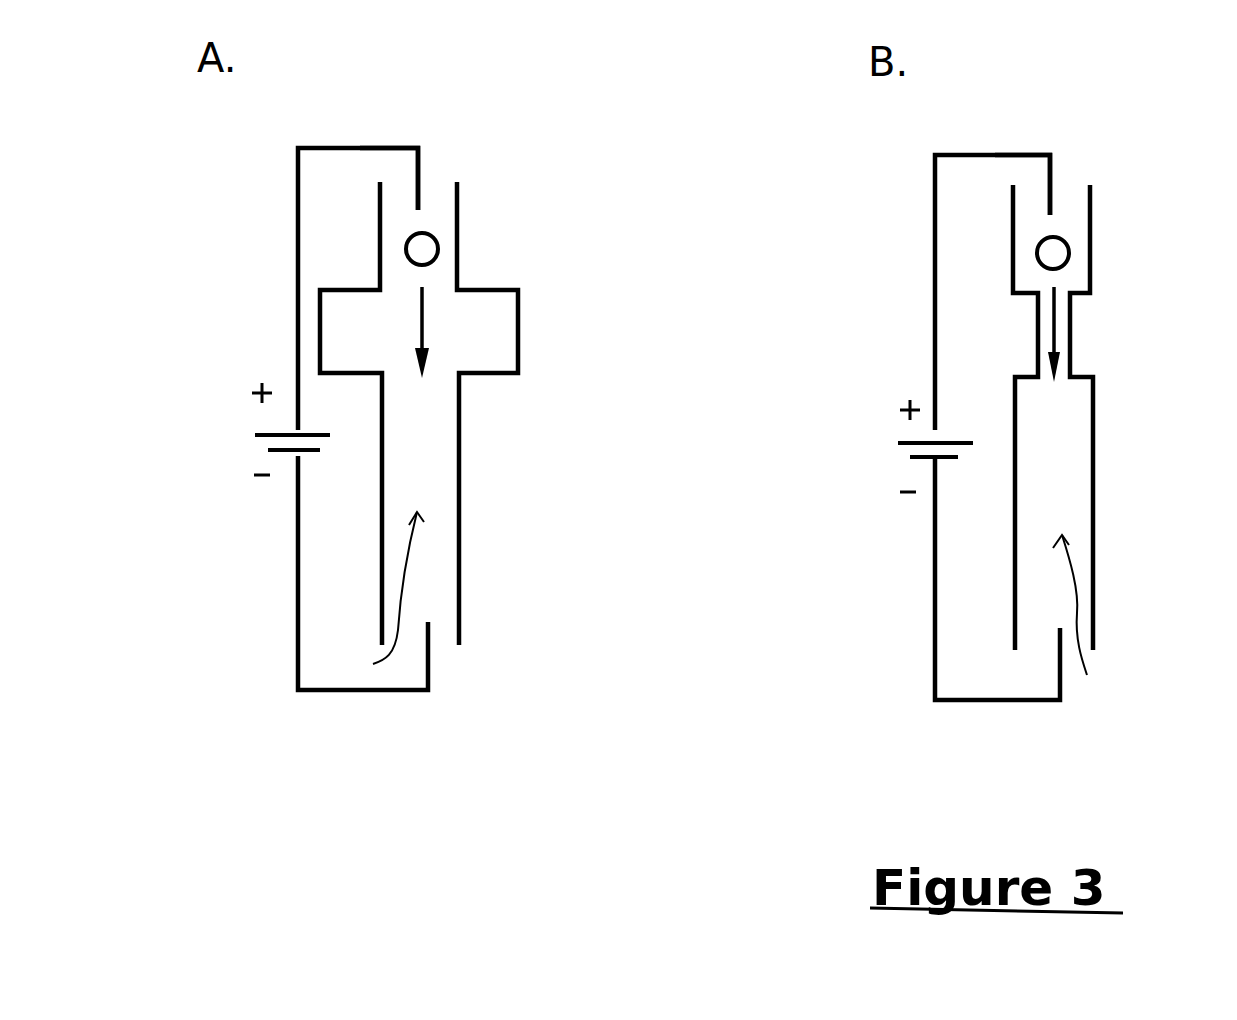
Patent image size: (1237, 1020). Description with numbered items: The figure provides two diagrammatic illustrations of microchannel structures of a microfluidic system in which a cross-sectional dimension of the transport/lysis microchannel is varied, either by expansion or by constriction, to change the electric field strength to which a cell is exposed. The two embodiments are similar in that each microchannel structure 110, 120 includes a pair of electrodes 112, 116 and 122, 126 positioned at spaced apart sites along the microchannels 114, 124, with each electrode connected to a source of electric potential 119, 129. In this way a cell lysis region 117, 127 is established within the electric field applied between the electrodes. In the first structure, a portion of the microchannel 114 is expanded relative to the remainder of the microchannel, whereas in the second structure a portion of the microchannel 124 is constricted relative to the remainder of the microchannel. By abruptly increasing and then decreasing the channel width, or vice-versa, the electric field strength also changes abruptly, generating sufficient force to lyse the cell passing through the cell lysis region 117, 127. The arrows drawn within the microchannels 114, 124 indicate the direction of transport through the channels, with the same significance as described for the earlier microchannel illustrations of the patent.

The microchannel structure 110 is at (553, 341).
The electrode 112 is at (430, 170).
The microchannel 114 is at (462, 515).
The electrode 116 is at (427, 664).
The cell lysis region 117 is at (378, 594).
The source of electric potential 119 is at (247, 443).
The microchannel structure 120 is at (873, 345).
The electrode 122 is at (1055, 175).
The microchannel 124 is at (1103, 540).
The electrode 126 is at (1045, 670).
The cell lysis region 127 is at (1098, 621).
The source of electric potential 129 is at (892, 455).